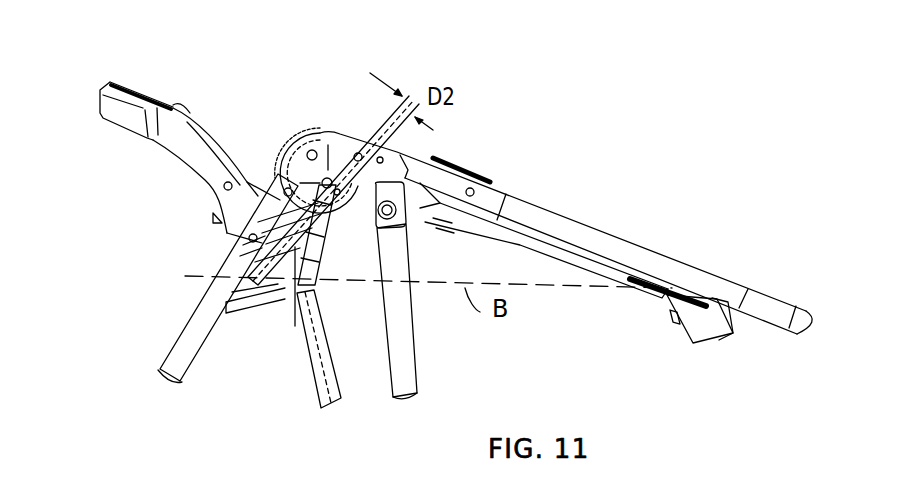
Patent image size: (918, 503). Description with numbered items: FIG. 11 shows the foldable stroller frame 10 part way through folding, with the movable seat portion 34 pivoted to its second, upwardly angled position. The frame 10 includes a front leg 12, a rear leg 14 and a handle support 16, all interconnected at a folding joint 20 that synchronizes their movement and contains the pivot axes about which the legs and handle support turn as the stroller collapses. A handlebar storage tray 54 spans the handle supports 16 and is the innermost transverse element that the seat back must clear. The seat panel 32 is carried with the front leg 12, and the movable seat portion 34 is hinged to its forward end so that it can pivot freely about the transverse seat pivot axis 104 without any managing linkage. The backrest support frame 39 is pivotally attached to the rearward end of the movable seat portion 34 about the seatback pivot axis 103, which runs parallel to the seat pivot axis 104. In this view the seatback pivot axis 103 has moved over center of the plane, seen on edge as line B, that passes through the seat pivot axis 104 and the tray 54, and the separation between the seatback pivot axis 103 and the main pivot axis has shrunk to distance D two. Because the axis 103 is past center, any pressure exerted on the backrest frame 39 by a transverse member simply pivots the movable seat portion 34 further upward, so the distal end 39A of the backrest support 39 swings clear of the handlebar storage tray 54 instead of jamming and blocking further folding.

The foldable stroller frame 10 is at (326, 184).
The front leg 12 is at (188, 322).
The rear leg 14 is at (420, 346).
The handle support 16 is at (580, 223).
The folding joint 20 is at (320, 132).
The seat panel 32 is at (257, 297).
The movable seat portion 34 is at (322, 302).
The backrest support frame 39 is at (520, 240).
The distal end of back rest support 39A is at (667, 282).
The handlebar storage tray 54 is at (693, 337).
The seatback pivot axis 103 is at (318, 288).
The seat pivot axis 104 is at (288, 286).